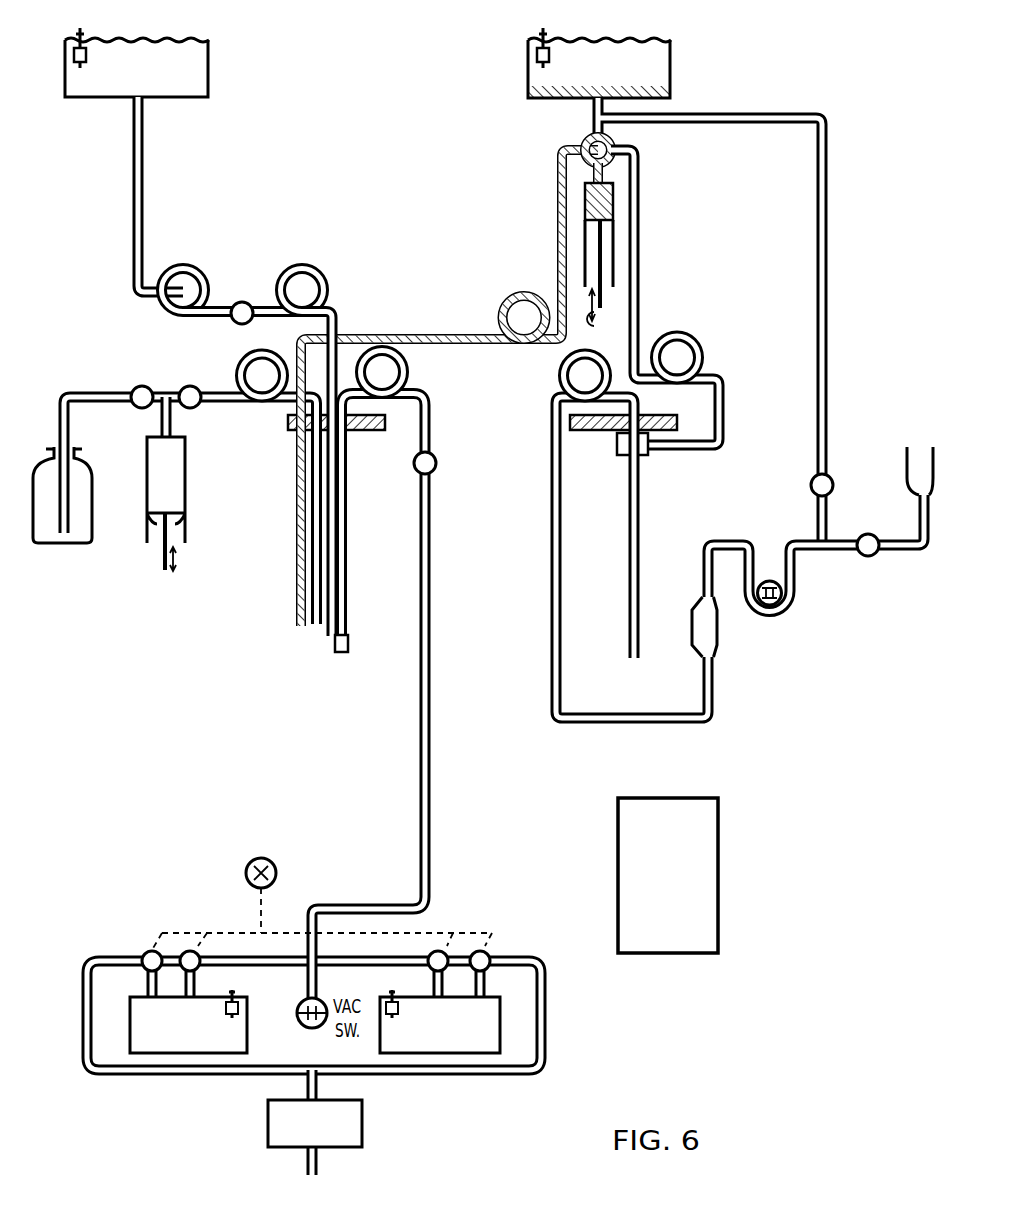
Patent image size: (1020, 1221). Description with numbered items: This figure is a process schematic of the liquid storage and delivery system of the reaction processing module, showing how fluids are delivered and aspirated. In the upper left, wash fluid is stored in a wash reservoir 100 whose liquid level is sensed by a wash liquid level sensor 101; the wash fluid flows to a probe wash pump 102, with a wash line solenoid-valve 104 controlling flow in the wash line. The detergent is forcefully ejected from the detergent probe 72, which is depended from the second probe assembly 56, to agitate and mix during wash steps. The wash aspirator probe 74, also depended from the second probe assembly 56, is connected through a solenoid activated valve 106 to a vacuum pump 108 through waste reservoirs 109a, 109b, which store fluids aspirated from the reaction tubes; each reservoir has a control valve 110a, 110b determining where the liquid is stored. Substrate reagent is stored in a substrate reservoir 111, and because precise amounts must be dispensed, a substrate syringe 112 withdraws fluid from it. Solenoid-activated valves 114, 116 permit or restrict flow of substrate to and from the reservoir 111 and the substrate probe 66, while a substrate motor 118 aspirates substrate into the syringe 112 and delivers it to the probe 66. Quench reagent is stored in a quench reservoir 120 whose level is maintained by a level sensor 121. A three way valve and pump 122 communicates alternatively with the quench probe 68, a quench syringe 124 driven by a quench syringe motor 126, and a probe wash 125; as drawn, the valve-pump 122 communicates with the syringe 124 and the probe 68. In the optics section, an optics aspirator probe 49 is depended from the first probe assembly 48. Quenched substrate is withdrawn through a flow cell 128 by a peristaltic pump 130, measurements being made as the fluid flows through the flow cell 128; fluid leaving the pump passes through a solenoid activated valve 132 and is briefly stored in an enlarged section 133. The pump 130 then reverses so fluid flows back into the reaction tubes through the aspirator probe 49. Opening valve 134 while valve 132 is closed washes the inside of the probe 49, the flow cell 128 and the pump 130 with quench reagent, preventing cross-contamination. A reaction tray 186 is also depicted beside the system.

The first probe assembly 48 is at (671, 420).
The optics aspirator probe 49 is at (632, 612).
The second probe assembly 56 is at (374, 432).
The substrate probe 66 is at (314, 627).
The quench probe 68 is at (296, 523).
The detergent probe 72 is at (328, 640).
The wash aspirator probe 74 is at (349, 642).
The wash reservoir 100 is at (200, 67).
The wash liquid level sensor 101 is at (84, 30).
The probe wash pump 102 is at (184, 264).
The wash line solenoid-valve 104 is at (243, 301).
The solenoid activated valve 106 is at (437, 463).
The vacuum pump 108 is at (363, 1130).
The waste reservoir 109a is at (200, 1053).
The waste reservoir 109b is at (480, 1053).
The control valve 110a is at (170, 955).
The control valve 110b is at (460, 952).
The substrate reservoir 111 is at (91, 462).
The substrate syringe 112 is at (182, 496).
The solenoid-activated valve 114 is at (140, 385).
The solenoid-activated valve 116 is at (190, 385).
The substrate motor 118 is at (179, 563).
The quench reservoir 120 is at (663, 62).
The level sensor 121 is at (545, 28).
The three way valve and pump 122 is at (578, 137).
The quench syringe 124 is at (604, 226).
The probe wash 125 is at (684, 450).
The quench syringe motor 126 is at (607, 319).
The flow cell 128 is at (720, 632).
The peristaltic pump 130 is at (796, 600).
The solenoid activated valve 132 is at (878, 556).
The enlarged section 133 is at (911, 446).
The valve 134 is at (830, 477).
The reaction tray 186 is at (718, 888).